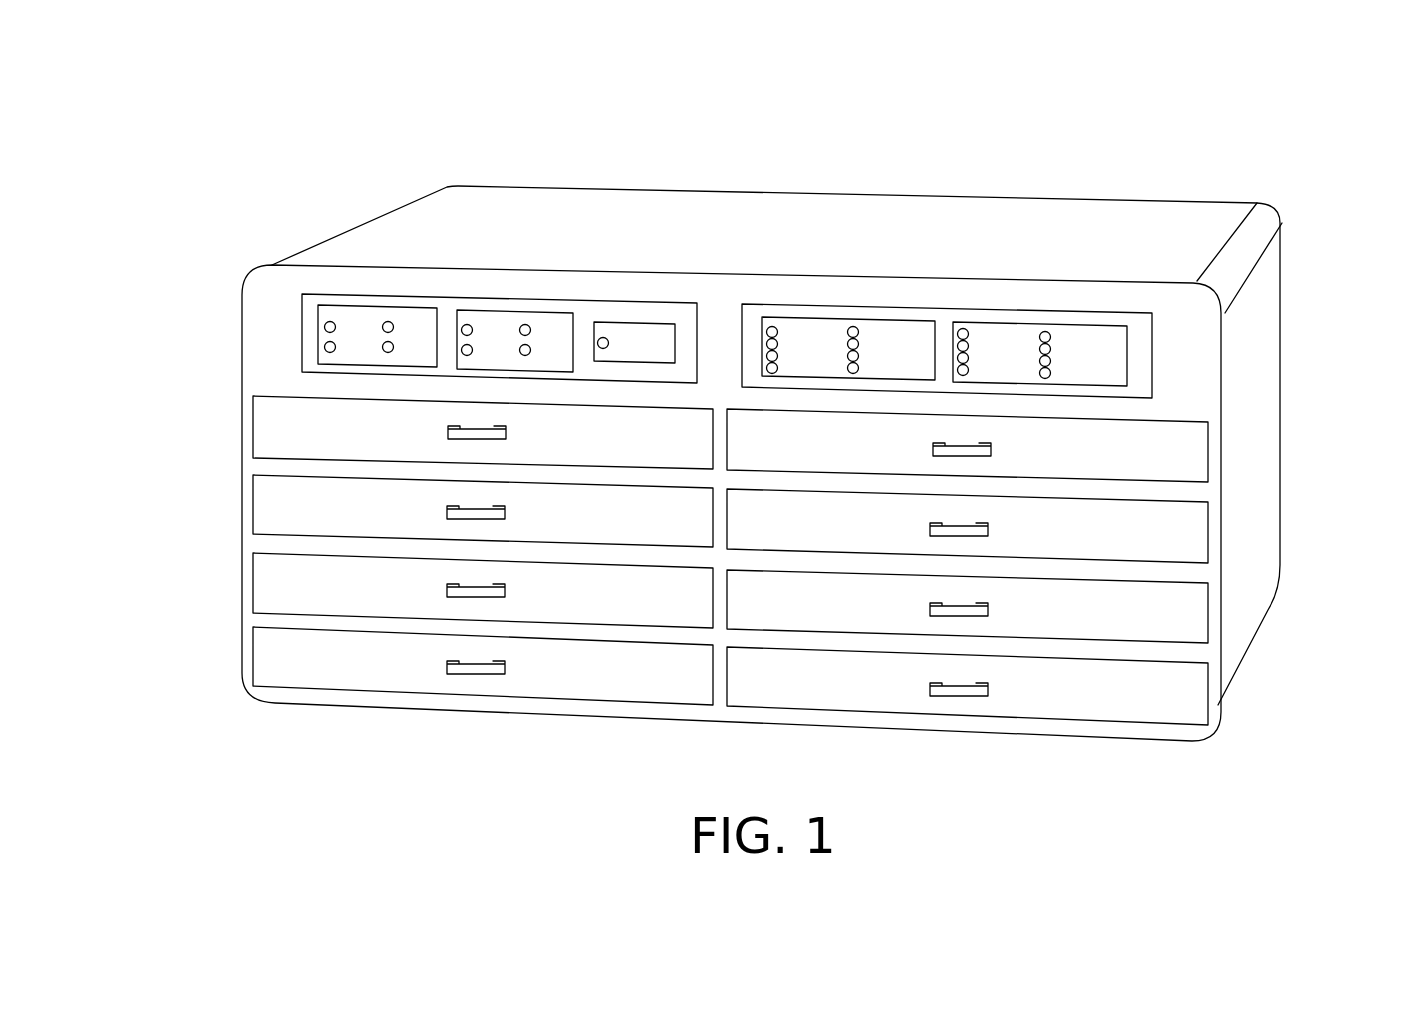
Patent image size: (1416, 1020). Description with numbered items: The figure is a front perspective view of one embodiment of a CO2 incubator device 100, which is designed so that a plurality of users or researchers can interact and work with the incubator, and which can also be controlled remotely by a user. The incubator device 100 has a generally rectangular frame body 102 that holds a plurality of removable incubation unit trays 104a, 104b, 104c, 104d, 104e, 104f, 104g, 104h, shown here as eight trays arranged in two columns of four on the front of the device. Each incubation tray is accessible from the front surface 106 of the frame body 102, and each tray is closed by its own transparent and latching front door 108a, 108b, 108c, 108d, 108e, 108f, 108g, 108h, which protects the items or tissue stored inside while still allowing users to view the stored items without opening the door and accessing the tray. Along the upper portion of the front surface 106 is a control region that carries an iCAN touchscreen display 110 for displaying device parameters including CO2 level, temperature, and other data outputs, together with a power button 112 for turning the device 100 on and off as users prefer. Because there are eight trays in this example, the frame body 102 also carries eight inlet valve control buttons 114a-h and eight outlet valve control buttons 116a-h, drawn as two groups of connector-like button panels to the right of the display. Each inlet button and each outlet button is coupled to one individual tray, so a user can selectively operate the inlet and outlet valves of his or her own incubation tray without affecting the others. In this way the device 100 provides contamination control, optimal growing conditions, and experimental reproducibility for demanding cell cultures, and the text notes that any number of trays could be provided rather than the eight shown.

The CO2 incubator device 100 is at (312, 213).
The frame body 102 is at (1292, 387).
The incubation unit tray 104a is at (260, 423).
The incubation unit tray 104b is at (275, 508).
The incubation unit tray 104c is at (273, 585).
The incubation unit tray 104d is at (273, 667).
The incubation unit tray 104e is at (1208, 445).
The incubation unit tray 104f is at (1208, 530).
The incubation unit tray 104g is at (1208, 613).
The incubation unit tray 104h is at (1208, 692).
The front surface 106 is at (265, 332).
The transparent front door 108a is at (573, 445).
The transparent front door 108b is at (578, 525).
The transparent front door 108c is at (573, 604).
The transparent front door 108d is at (603, 685).
The transparent front door 108e is at (1077, 466).
The transparent front door 108f is at (1077, 545).
The transparent front door 108g is at (1083, 623).
The transparent front door 108h is at (1103, 705).
The iCAN touchscreen display 110 is at (421, 330).
The power button 112 is at (648, 342).
The inlet valve control buttons 114a-h is at (823, 333).
The outlet valve control buttons 116a-h is at (1007, 357).